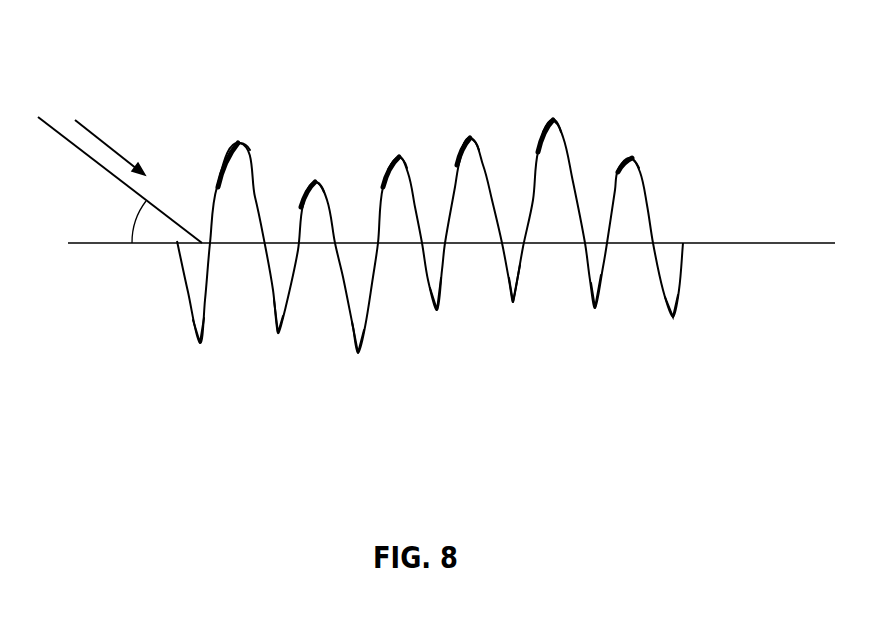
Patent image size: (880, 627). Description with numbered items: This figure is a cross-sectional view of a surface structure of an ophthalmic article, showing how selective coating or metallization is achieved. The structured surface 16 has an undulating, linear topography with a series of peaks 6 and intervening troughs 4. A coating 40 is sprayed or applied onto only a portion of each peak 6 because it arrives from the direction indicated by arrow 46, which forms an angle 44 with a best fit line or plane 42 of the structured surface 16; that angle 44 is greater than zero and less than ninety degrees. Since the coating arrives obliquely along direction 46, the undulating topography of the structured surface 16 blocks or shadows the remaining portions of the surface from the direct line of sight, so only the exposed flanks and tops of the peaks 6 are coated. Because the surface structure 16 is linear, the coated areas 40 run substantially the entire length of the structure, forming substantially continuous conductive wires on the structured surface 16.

The structured surface 16 is at (685, 102).
The coating 40 is at (233, 142).
The peak 6 is at (248, 143).
The trough of coil 4 is at (201, 347).
The best fit line or plane 42 is at (105, 245).
The angle 44 is at (132, 215).
The arrow indicating coating direction 46 is at (97, 133).